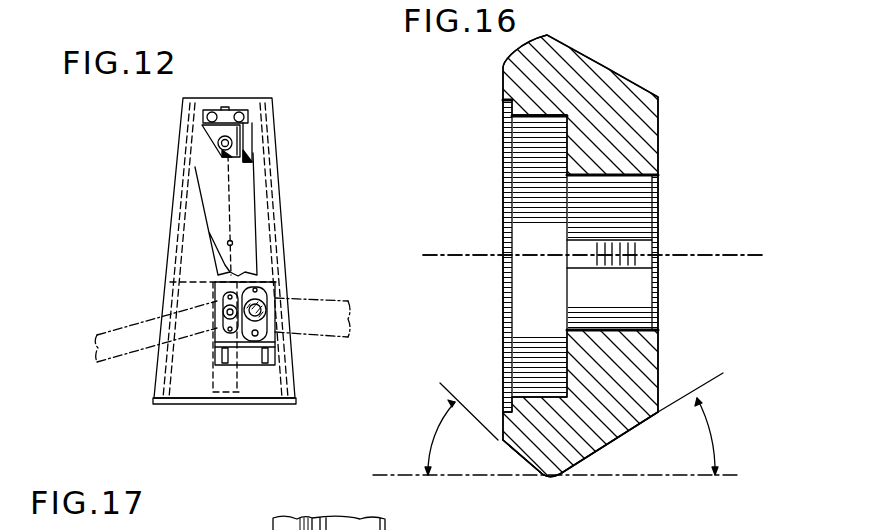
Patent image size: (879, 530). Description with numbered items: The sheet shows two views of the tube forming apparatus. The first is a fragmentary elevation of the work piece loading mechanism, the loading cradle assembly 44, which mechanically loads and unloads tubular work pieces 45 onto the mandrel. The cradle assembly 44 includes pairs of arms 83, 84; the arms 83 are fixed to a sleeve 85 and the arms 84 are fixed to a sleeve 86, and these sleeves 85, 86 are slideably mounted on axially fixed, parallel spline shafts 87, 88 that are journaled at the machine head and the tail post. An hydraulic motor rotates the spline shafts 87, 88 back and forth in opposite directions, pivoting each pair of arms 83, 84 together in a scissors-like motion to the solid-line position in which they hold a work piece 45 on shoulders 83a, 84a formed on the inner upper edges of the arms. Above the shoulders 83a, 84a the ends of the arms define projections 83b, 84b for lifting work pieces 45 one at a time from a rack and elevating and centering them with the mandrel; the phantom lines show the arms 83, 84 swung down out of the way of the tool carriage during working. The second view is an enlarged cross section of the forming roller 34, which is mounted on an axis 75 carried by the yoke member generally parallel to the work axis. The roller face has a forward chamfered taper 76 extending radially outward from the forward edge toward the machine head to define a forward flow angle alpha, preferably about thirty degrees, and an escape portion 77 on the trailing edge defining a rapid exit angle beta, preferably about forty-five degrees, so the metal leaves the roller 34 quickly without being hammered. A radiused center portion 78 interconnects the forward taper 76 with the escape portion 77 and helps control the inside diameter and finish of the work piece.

In FIG. 12, the loading cradle assembly 44 is at (298, 247).
In FIG. 12, the tubular work piece 45 is at (246, 113).
In FIG. 12, the arm 83 is at (208, 232).
In FIG. 12, the shoulder 83a is at (222, 153).
In FIG. 12, the projection 83b is at (202, 137).
In FIG. 12, the arm 84 is at (253, 203).
In FIG. 12, the shoulder 84a is at (249, 161).
In FIG. 12, the projection 84b is at (240, 146).
In FIG. 12, the sleeve 85 is at (228, 314).
In FIG. 12, the sleeve 86 is at (270, 325).
In FIG. 12, the spline shaft 87 is at (217, 336).
In FIG. 12, the spline shaft 88 is at (263, 306).
In FIG. 16, the forming roller 34 is at (674, 379).
In FIG. 16, the axis 75 is at (678, 254).
In FIG. 16, the forward chamfered taper 76 is at (620, 437).
In FIG. 16, the escape portion 77 is at (510, 453).
In FIG. 16, the center portion 78 is at (533, 463).